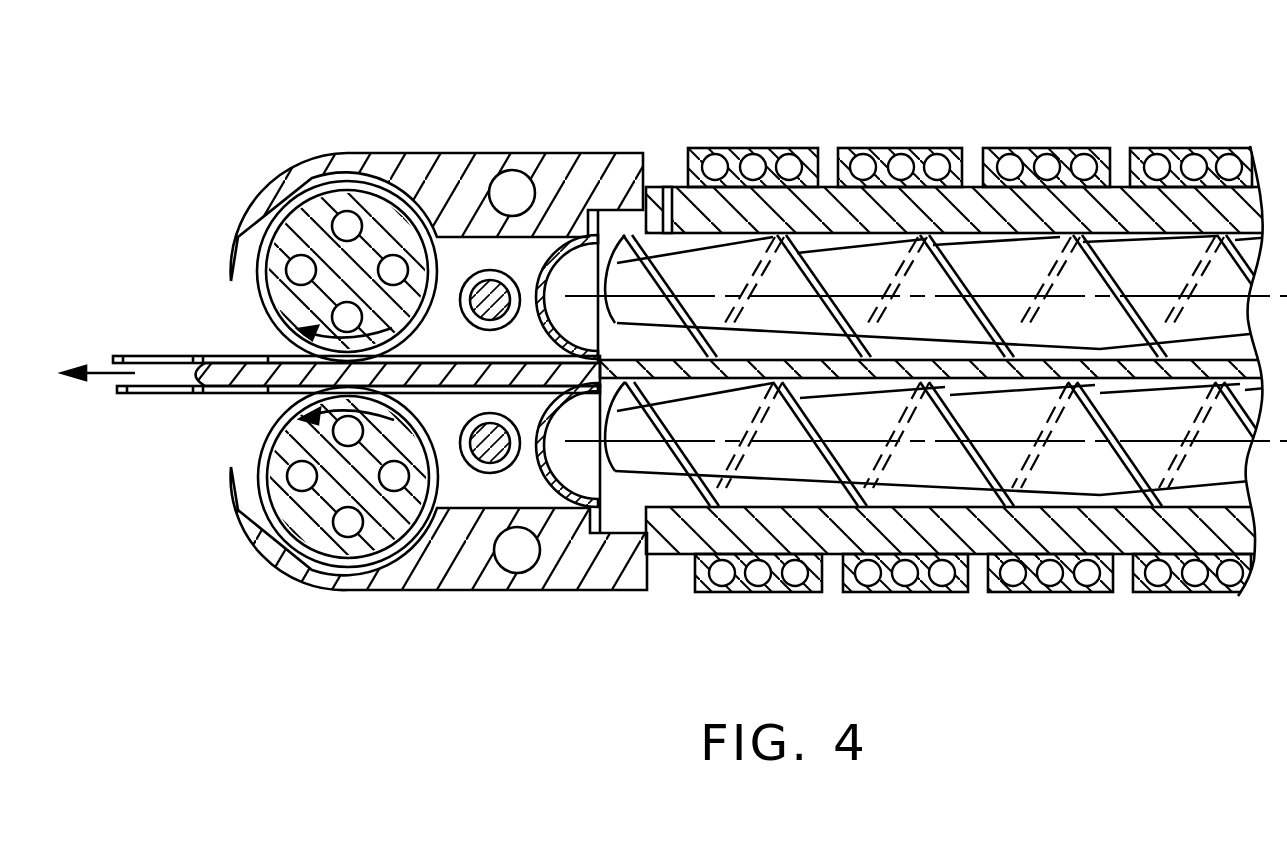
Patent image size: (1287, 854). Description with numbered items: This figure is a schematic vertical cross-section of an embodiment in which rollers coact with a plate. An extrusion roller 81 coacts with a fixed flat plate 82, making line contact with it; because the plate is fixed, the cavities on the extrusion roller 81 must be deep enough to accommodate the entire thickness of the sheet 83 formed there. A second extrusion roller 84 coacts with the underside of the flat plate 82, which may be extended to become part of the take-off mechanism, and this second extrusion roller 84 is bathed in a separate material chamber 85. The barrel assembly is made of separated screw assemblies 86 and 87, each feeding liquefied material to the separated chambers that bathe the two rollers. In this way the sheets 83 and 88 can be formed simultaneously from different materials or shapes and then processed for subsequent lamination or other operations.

The extrusion roller 81 is at (330, 200).
The flat plate 82 is at (460, 360).
The sheet 83 is at (172, 355).
The second extrusion roller 84 is at (315, 545).
The material chamber 85 is at (470, 490).
The screw assembly 86 is at (668, 485).
The screw assembly 87 is at (656, 158).
The sheet 88 is at (195, 393).